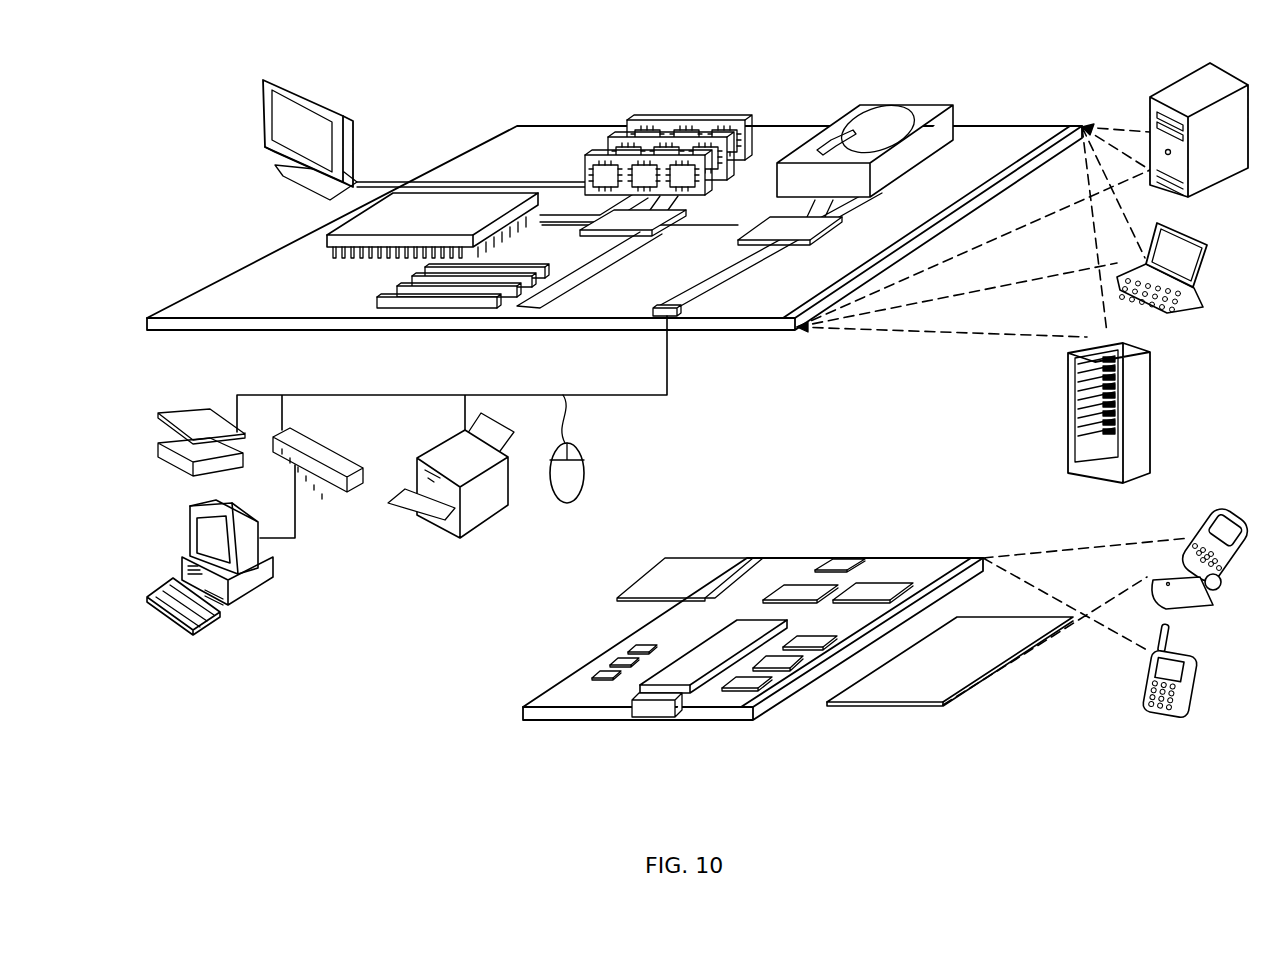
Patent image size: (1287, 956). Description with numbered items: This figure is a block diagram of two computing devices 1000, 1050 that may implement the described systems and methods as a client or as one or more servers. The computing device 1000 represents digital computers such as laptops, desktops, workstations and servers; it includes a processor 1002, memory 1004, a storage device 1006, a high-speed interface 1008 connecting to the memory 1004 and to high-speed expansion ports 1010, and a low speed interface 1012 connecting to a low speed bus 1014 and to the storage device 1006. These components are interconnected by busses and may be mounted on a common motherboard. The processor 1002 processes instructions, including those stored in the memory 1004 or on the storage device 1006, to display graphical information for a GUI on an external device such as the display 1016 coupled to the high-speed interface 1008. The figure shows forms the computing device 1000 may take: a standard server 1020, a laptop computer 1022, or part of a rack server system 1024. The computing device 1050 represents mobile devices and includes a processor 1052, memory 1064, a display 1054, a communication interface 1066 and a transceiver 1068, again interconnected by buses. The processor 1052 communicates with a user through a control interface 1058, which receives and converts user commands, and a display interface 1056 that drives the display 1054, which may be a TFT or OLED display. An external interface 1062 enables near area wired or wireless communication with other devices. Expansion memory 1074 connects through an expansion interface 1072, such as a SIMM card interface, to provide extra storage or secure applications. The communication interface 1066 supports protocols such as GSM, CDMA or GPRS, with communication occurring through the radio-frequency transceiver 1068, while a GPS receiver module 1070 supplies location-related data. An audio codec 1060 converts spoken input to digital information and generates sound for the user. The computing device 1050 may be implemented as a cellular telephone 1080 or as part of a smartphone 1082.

The computing device 1000 is at (447, 99).
The processor 1002 is at (330, 237).
The memory 1004 is at (645, 140).
The storage device 1006 is at (862, 110).
The high-speed interface 1008 is at (610, 222).
The high-speed expansion ports 1010 is at (385, 295).
The low speed interface 1012 is at (773, 222).
The low speed bus 1014 is at (679, 320).
The display 1016 is at (268, 78).
The standard server 1020 is at (1149, 112).
The laptop computer 1022 is at (1208, 246).
The rack server system 1024 is at (1068, 432).
The computing device 1050 is at (504, 716).
The processor 1052 is at (690, 680).
The display 1054 is at (912, 692).
The display interface 1056 is at (770, 684).
The control interface 1058 is at (785, 668).
The audio codec 1060 is at (810, 645).
The external interface 1062 is at (660, 712).
The memory 1064 is at (598, 677).
The communication interface 1066 is at (800, 592).
The transceiver 1068 is at (872, 592).
The GPS receiver module 1070 is at (845, 562).
The expansion interface 1072 is at (737, 567).
The expansion memory 1074 is at (735, 567).
The cellular telephone 1080 is at (1203, 522).
The smartphone 1082 is at (1147, 683).